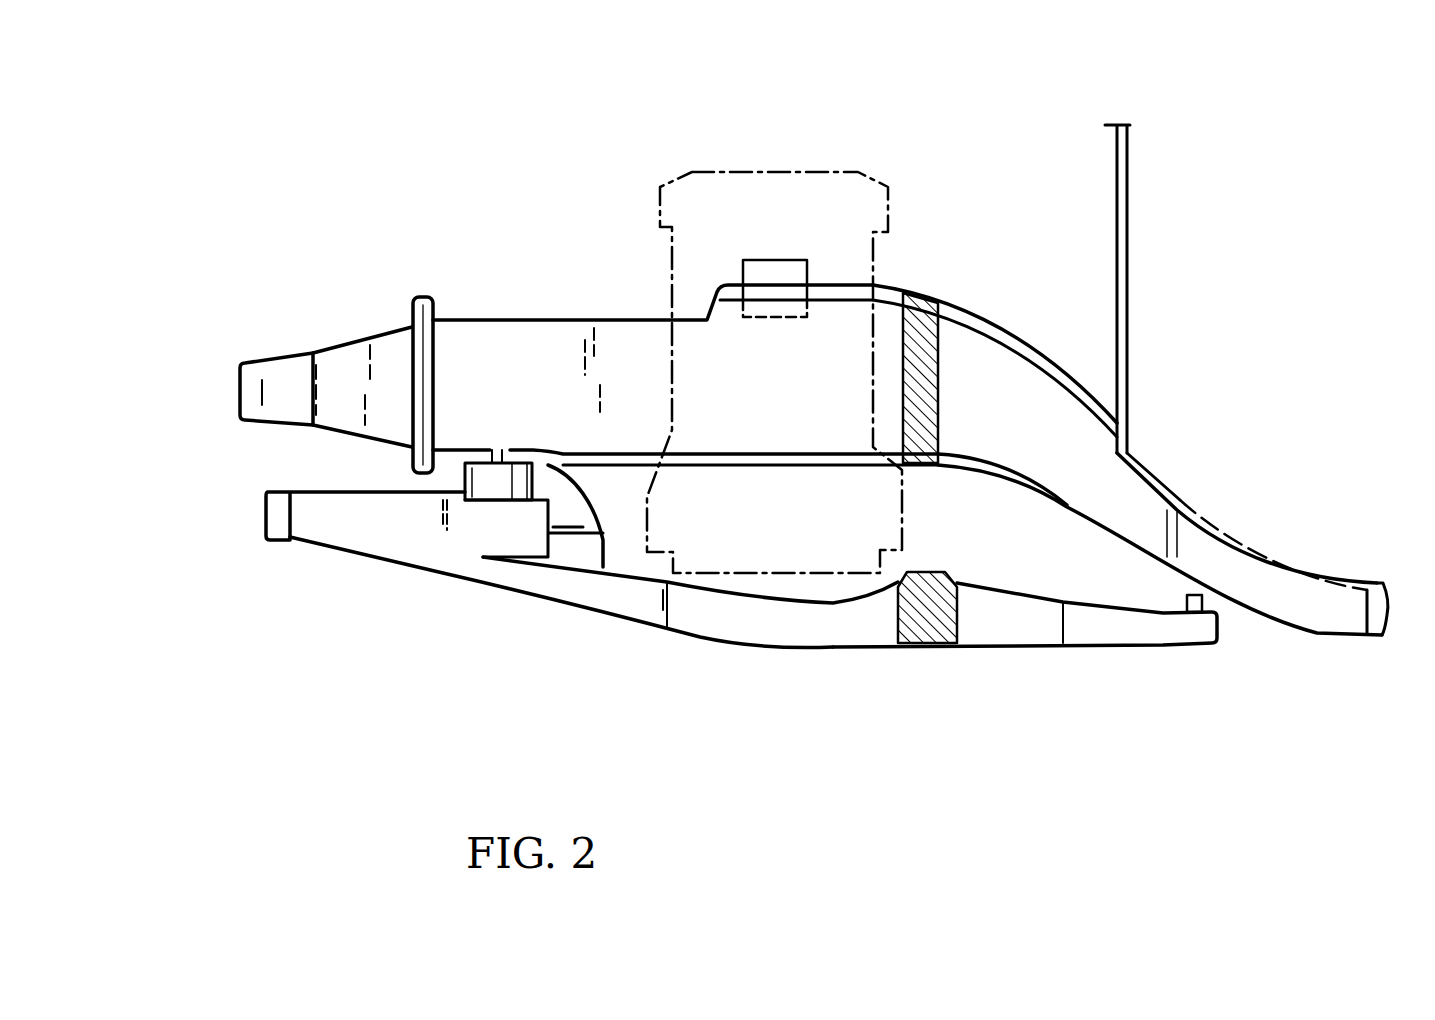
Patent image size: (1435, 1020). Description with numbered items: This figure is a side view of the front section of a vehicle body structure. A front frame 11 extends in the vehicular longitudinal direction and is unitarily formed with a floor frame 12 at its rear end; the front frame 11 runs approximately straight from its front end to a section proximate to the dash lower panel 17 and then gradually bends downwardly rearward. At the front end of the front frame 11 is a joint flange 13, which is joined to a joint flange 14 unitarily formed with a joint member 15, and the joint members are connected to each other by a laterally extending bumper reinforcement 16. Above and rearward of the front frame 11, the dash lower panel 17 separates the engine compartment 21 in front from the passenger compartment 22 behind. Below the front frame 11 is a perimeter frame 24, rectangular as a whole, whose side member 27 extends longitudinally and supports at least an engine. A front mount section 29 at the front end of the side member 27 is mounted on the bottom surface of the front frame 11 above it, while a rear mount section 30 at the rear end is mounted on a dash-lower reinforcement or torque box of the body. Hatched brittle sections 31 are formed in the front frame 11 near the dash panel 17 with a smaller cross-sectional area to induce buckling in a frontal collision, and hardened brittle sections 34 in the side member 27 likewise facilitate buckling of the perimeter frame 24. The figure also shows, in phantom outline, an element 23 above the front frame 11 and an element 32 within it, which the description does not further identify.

The front frame 11 is at (572, 340).
The floor frame 12 is at (1333, 607).
The joint flange 13 is at (433, 302).
The joint flange 14 is at (413, 298).
The joint member 15 is at (345, 332).
The bumper reinforcement 16 is at (240, 378).
The dash lower panel 17 is at (1112, 163).
The engine compartment 21 is at (996, 228).
The passenger compartment 22 is at (1322, 335).
The mounting block 23 is at (707, 172).
The perimeter frame 24 is at (700, 633).
The side member 27 is at (847, 623).
The front mount section 29 is at (497, 482).
The rear mount section 30 is at (1200, 623).
The brittle section 31 is at (937, 372).
The insert 32 is at (758, 262).
The brittle section 34 is at (945, 607).